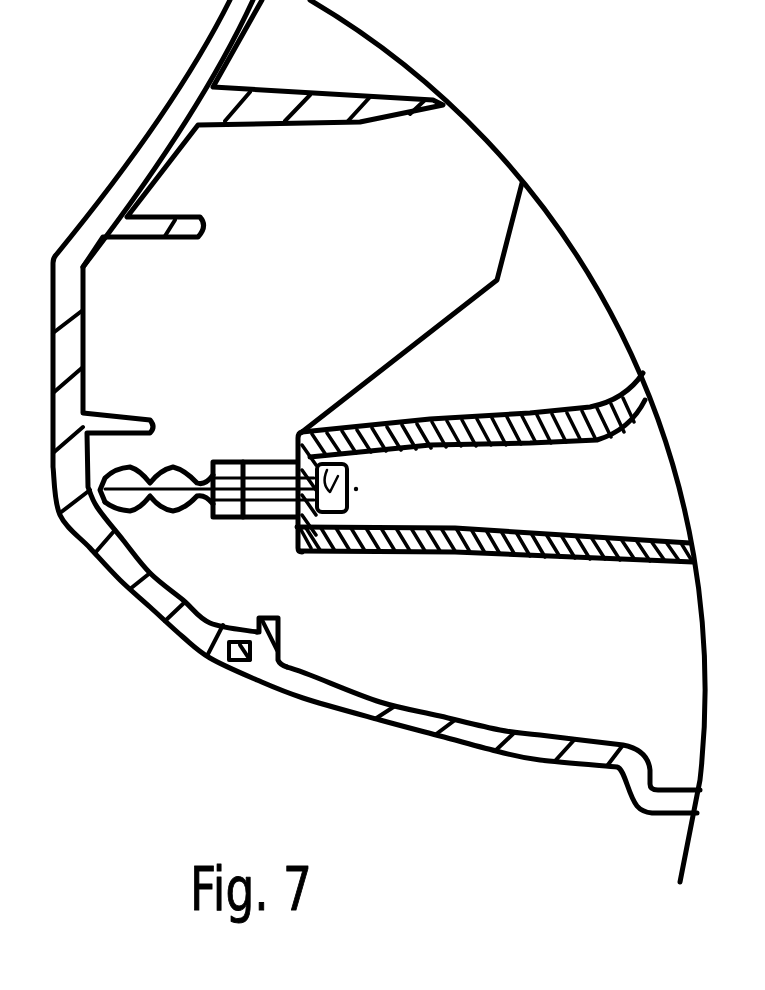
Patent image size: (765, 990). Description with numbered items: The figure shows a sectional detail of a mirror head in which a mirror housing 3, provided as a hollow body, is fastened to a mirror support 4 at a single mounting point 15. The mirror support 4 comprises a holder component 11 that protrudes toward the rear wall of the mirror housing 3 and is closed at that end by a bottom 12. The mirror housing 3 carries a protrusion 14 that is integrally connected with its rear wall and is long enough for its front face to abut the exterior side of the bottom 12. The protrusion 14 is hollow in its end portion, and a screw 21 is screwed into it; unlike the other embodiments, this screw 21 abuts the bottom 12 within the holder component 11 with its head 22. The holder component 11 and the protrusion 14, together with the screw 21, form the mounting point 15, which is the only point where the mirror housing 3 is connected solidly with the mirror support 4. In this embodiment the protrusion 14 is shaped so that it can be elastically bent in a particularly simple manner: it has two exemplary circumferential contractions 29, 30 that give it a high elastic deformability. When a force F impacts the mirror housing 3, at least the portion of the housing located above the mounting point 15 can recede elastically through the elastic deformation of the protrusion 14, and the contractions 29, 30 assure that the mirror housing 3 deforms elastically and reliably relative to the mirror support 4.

The mirror housing 3 is at (152, 152).
The mirror support 4 is at (600, 575).
The holder component 11 is at (424, 556).
The bottom 12 is at (297, 527).
The protrusion 14 is at (222, 458).
The mounting point 15 is at (287, 440).
The screw 21 is at (255, 463).
The head 22 is at (405, 425).
The circumferential contraction 29 is at (150, 507).
The circumferential contraction 30 is at (193, 505).
The force F is at (205, 172).